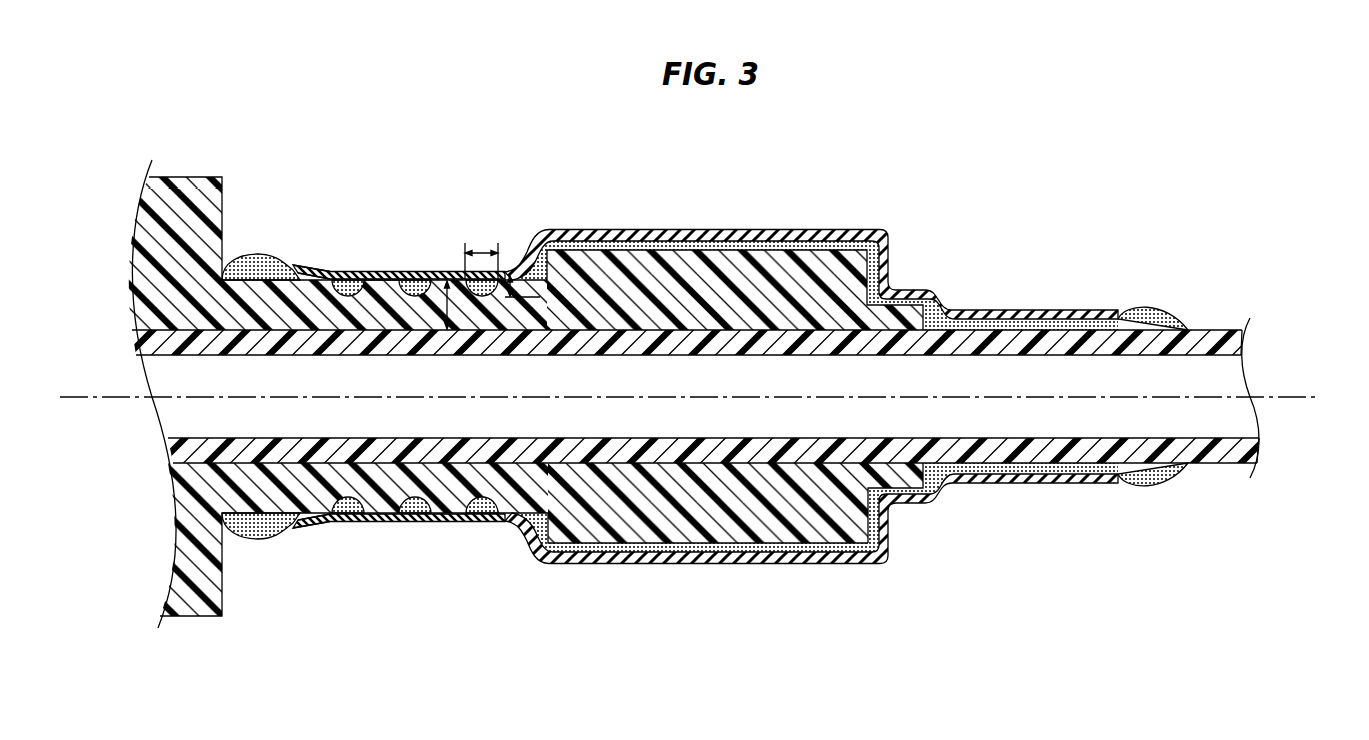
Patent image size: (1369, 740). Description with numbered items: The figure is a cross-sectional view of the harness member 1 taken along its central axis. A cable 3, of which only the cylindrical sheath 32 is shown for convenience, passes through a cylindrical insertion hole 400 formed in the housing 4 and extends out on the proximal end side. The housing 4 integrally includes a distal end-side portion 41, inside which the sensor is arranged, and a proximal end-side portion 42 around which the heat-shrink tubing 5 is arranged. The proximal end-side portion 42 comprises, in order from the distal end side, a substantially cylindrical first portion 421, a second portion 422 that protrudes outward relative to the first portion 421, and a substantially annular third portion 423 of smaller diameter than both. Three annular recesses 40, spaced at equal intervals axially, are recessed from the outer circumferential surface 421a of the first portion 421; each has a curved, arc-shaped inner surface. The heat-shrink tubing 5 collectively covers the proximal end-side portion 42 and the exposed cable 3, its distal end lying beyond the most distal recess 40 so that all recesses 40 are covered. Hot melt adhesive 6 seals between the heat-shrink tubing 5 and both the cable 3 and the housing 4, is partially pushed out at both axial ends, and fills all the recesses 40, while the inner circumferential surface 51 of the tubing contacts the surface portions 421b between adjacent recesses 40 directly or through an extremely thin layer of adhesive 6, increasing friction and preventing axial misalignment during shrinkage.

The harness member 1 is at (701, 376).
The cable 3 is at (1220, 328).
The sheath 32 is at (1227, 453).
The housing 4 is at (147, 221).
The recess 40 is at (353, 517).
The distal end-side portion 41 is at (191, 190).
The proximal end-side portion 42 is at (683, 263).
The insertion hole 400 is at (723, 333).
The first portion 421 is at (270, 490).
The outer circumferential surface 421a is at (288, 266).
The surface portions 421b is at (437, 280).
The second portion 422 is at (725, 530).
The third portion 423 is at (905, 488).
The heat-shrink tubing 5 is at (725, 235).
The inner circumferential surface 51 is at (372, 284).
The hot melt adhesive 6 is at (251, 267).